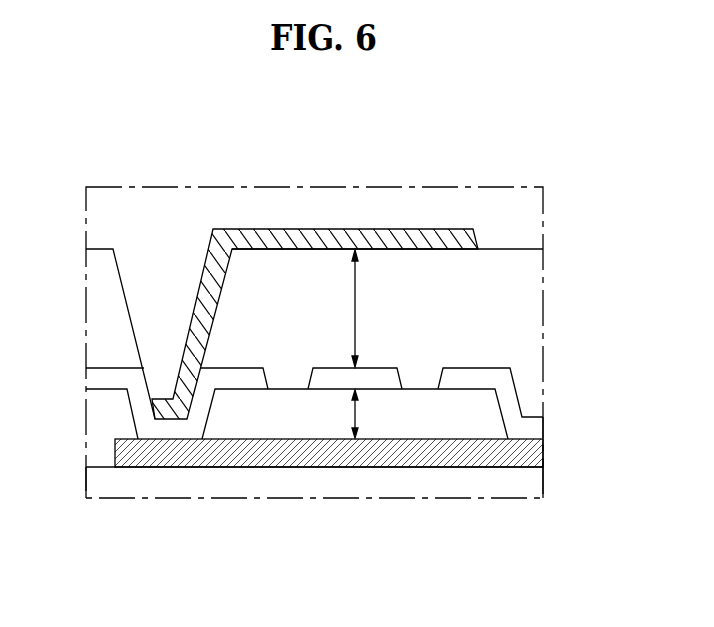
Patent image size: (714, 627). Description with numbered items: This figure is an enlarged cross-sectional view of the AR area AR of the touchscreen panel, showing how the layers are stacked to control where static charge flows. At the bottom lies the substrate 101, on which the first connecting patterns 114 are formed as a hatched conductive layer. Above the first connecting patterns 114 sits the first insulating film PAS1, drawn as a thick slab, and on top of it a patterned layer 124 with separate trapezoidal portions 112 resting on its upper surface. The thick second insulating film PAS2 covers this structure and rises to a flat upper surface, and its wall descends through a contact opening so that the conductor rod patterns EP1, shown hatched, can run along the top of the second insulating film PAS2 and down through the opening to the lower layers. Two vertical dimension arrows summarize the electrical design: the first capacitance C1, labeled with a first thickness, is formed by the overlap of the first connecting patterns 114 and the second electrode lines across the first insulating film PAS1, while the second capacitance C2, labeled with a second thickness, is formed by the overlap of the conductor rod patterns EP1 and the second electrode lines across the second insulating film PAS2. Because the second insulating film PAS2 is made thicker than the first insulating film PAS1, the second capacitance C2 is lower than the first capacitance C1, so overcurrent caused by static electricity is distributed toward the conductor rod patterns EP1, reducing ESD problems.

The AR area AR is at (132, 138).
The substrate 101 is at (135, 486).
The first connecting patterns 114 is at (207, 455).
The second conductive layer (drain/data electrode) 124 is at (336, 380).
The insulating pattern 112 is at (98, 378).
The first insulating film PAS1 is at (460, 417).
The second insulating film PAS2 is at (530, 320).
The conductor rod patterns EP1 is at (458, 240).
The first capacitance C1 is at (388, 414).
The second capacitance C2 is at (388, 308).